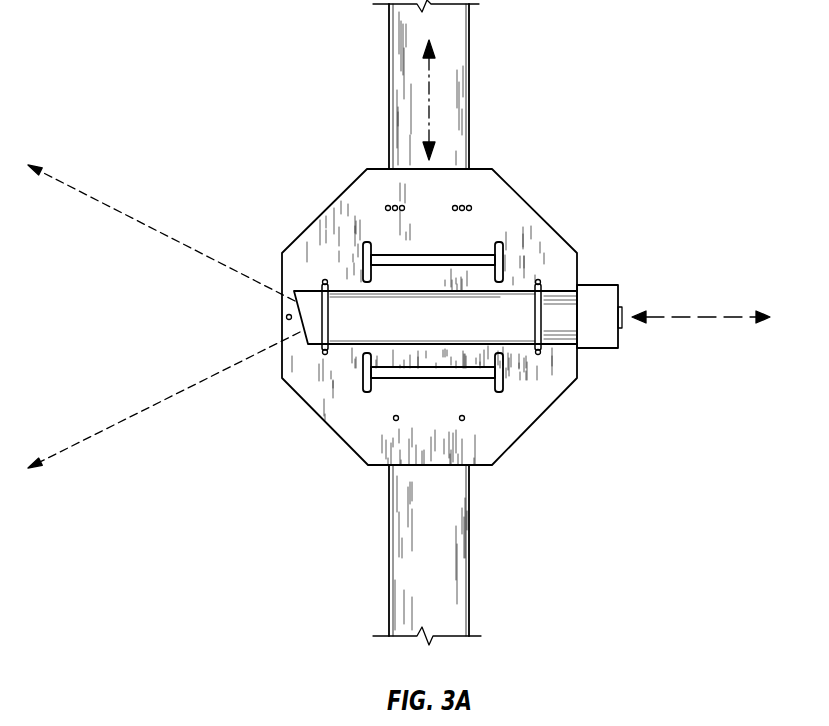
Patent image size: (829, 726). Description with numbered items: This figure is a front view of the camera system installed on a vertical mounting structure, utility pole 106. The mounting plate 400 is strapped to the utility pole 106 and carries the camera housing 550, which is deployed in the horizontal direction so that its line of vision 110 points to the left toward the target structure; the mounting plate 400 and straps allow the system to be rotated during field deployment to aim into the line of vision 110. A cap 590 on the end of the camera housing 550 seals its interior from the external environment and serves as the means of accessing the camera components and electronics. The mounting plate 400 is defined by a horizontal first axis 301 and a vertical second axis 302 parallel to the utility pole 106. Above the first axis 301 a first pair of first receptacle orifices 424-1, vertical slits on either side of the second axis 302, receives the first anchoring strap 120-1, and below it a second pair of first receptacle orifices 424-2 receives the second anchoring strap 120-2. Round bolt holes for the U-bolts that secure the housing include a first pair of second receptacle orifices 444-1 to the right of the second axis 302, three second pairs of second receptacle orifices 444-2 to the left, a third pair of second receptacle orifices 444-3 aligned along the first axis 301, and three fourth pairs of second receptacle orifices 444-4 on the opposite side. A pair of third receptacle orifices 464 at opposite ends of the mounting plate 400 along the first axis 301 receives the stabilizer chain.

The utility pole 106 is at (460, 52).
The second axis 302 is at (429, 123).
The first axis 301 is at (690, 317).
The line of vision 110 is at (138, 222).
The mounting plate 400 is at (288, 256).
The first anchoring strap 120-1 is at (378, 257).
The second anchoring strap 120-2 is at (378, 381).
The first pair of first receptacle orifices 424-1 is at (362, 252).
The second pair of first receptacle orifices 424-2 is at (503, 386).
The first pair of second receptacle orifices 444-1 is at (539, 281).
The second pairs of second receptacle orifices 444-2 is at (325, 356).
The third pair of second receptacle orifices 444-3 is at (465, 421).
The fourth pairs of second receptacle orifices 444-4 is at (472, 207).
The pair of third receptacle orifices 464 is at (286, 316).
The camera housing 550 is at (598, 348).
The cap 590 is at (619, 337).